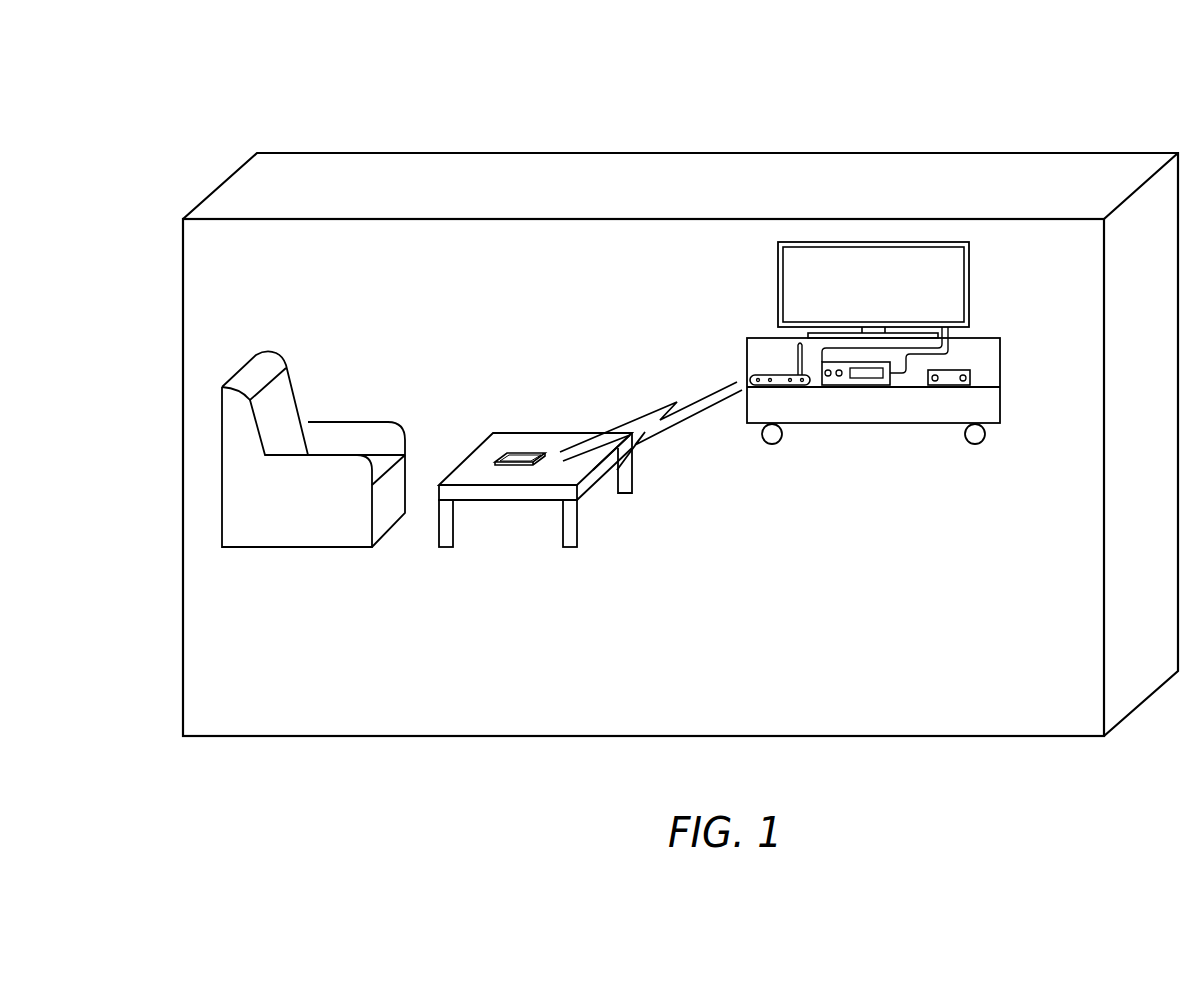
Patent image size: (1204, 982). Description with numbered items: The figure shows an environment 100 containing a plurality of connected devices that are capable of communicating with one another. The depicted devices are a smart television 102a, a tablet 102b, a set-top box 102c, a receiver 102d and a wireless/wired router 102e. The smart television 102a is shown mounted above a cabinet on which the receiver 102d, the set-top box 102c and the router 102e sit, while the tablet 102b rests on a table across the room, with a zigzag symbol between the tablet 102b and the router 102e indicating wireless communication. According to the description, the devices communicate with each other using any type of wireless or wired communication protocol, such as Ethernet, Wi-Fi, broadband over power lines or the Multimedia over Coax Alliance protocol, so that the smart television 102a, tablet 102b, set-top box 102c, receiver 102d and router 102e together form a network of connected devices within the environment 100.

The environment 100 is at (264, 99).
The smart television 102a is at (970, 282).
The tablet 102b is at (527, 452).
The set-top box 102c is at (970, 375).
The receiver 102d is at (857, 387).
The wireless/wired router 102e is at (765, 375).